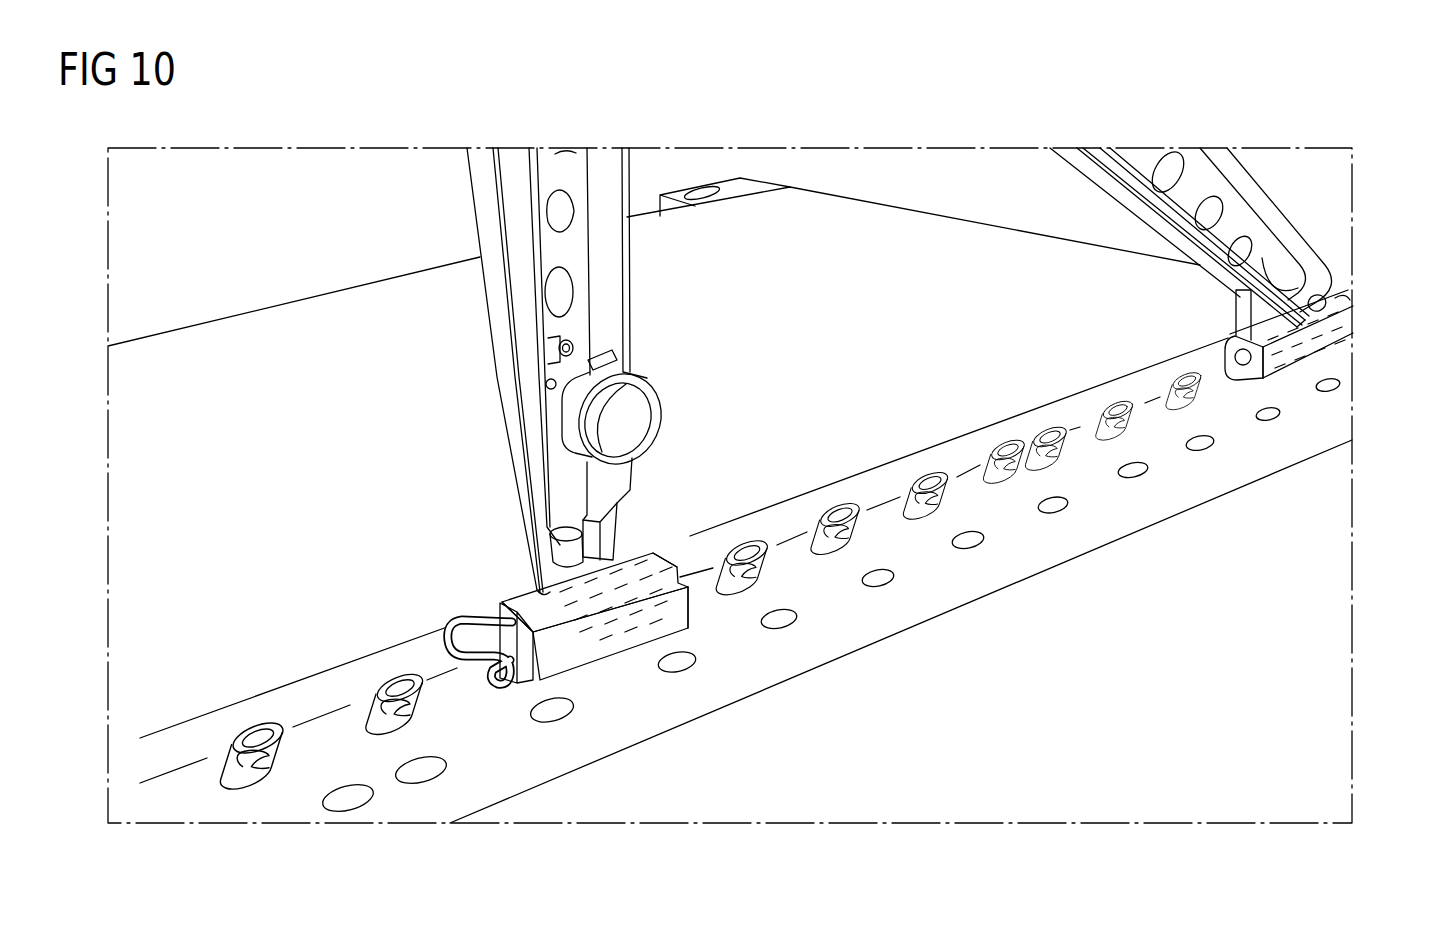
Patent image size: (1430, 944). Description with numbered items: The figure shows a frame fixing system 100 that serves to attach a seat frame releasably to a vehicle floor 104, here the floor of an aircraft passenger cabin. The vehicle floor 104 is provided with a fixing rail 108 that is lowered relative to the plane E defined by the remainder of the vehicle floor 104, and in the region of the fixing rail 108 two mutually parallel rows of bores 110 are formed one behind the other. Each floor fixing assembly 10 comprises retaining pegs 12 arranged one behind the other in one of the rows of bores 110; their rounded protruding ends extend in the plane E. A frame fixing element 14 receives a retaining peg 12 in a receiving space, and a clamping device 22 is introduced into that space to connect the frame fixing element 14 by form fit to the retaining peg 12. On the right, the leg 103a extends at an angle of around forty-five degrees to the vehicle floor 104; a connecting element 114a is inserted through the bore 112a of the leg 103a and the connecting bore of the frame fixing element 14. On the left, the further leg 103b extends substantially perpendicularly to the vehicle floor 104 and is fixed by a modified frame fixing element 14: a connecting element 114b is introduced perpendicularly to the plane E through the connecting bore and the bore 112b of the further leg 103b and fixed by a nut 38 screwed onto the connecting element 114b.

The floor fixing assembly 10 is at (865, 344).
The retaining peg 12 is at (393, 677).
The frame fixing element 14 is at (603, 647).
The clamping device 22 is at (477, 627).
The nut 38 is at (585, 568).
The frame fixing system 100 is at (1327, 257).
The leg 103a is at (1223, 333).
The further leg 103b is at (567, 162).
The vehicle floor 104 is at (790, 213).
The fixing rail 108 is at (263, 813).
The bores 110 is at (363, 805).
The bore 112a is at (1340, 290).
The bore 112b is at (648, 578).
The connecting element 114a is at (1348, 323).
The connecting element 114b is at (668, 578).
The plane E is at (118, 348).